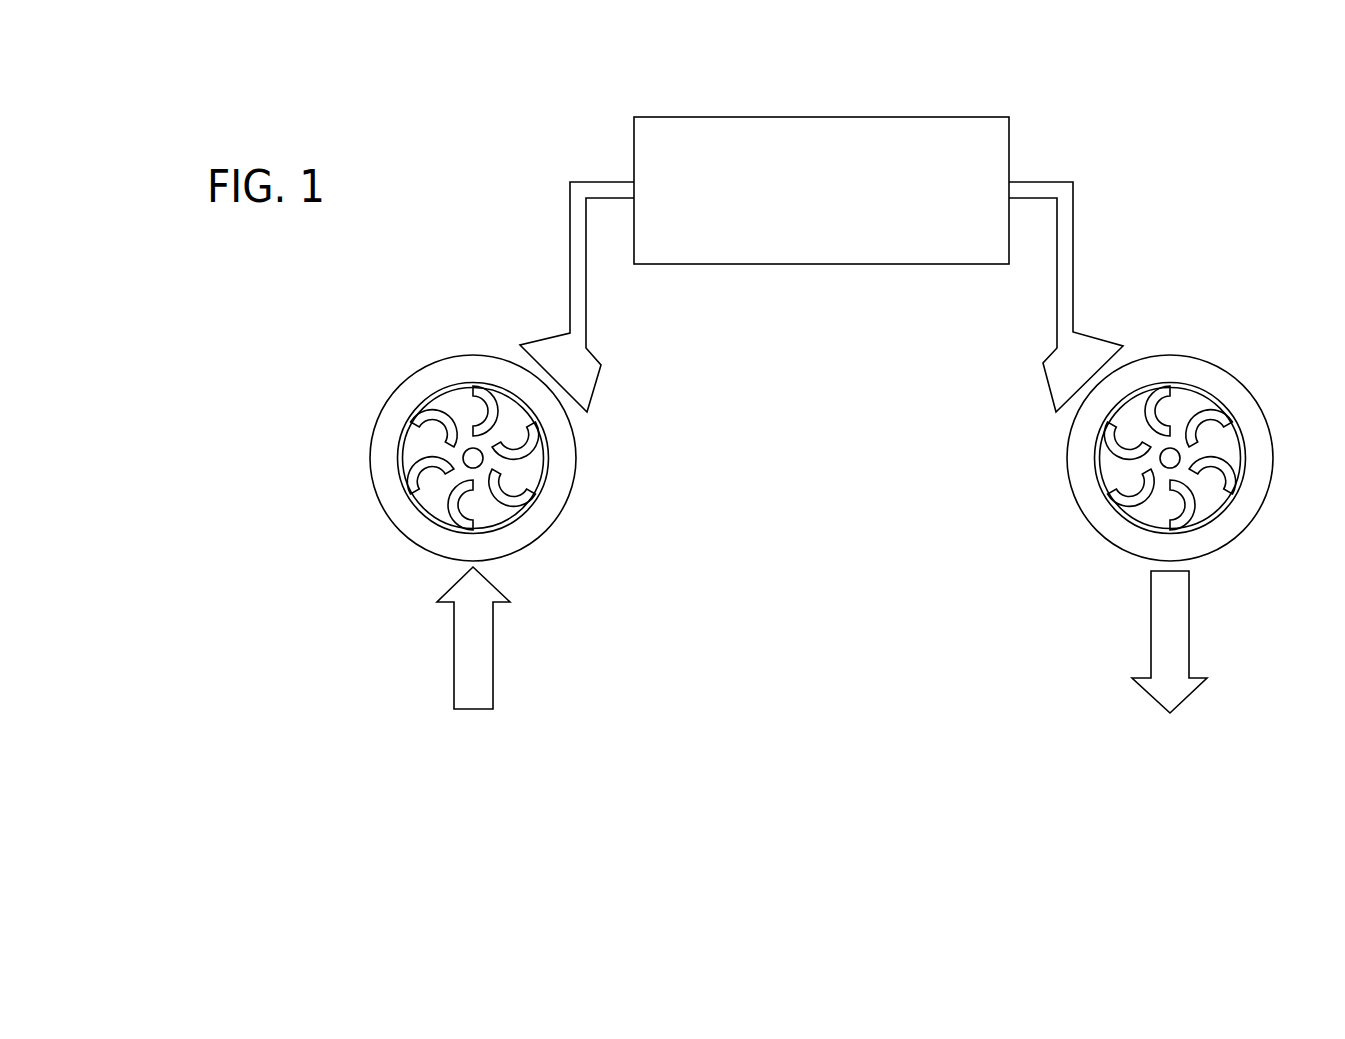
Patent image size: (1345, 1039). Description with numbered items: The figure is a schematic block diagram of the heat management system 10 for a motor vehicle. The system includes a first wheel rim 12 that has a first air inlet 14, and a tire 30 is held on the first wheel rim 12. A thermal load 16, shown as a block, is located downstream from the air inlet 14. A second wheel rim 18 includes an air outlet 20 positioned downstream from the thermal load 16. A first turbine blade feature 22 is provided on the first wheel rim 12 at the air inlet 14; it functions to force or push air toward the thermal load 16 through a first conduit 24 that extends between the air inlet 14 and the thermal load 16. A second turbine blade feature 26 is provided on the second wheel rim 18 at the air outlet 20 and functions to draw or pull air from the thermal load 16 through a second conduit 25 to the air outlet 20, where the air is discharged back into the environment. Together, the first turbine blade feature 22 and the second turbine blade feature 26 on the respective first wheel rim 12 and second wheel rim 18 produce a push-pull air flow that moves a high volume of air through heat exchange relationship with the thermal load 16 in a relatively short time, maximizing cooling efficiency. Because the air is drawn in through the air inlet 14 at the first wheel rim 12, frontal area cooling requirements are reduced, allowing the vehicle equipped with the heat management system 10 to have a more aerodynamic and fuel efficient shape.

The heat management system 10 is at (1135, 85).
The first wheel rim 12 is at (402, 482).
The first air inlet 14 is at (510, 493).
The thermal load 16 is at (838, 117).
The second wheel rim 18 is at (1237, 492).
The air outlet 20 is at (1133, 497).
The first turbine blade feature 22 is at (428, 528).
The first conduit 24 is at (577, 237).
The second conduit 25 is at (1073, 255).
The second turbine blade feature 26 is at (1203, 385).
The tire 30 is at (533, 542).